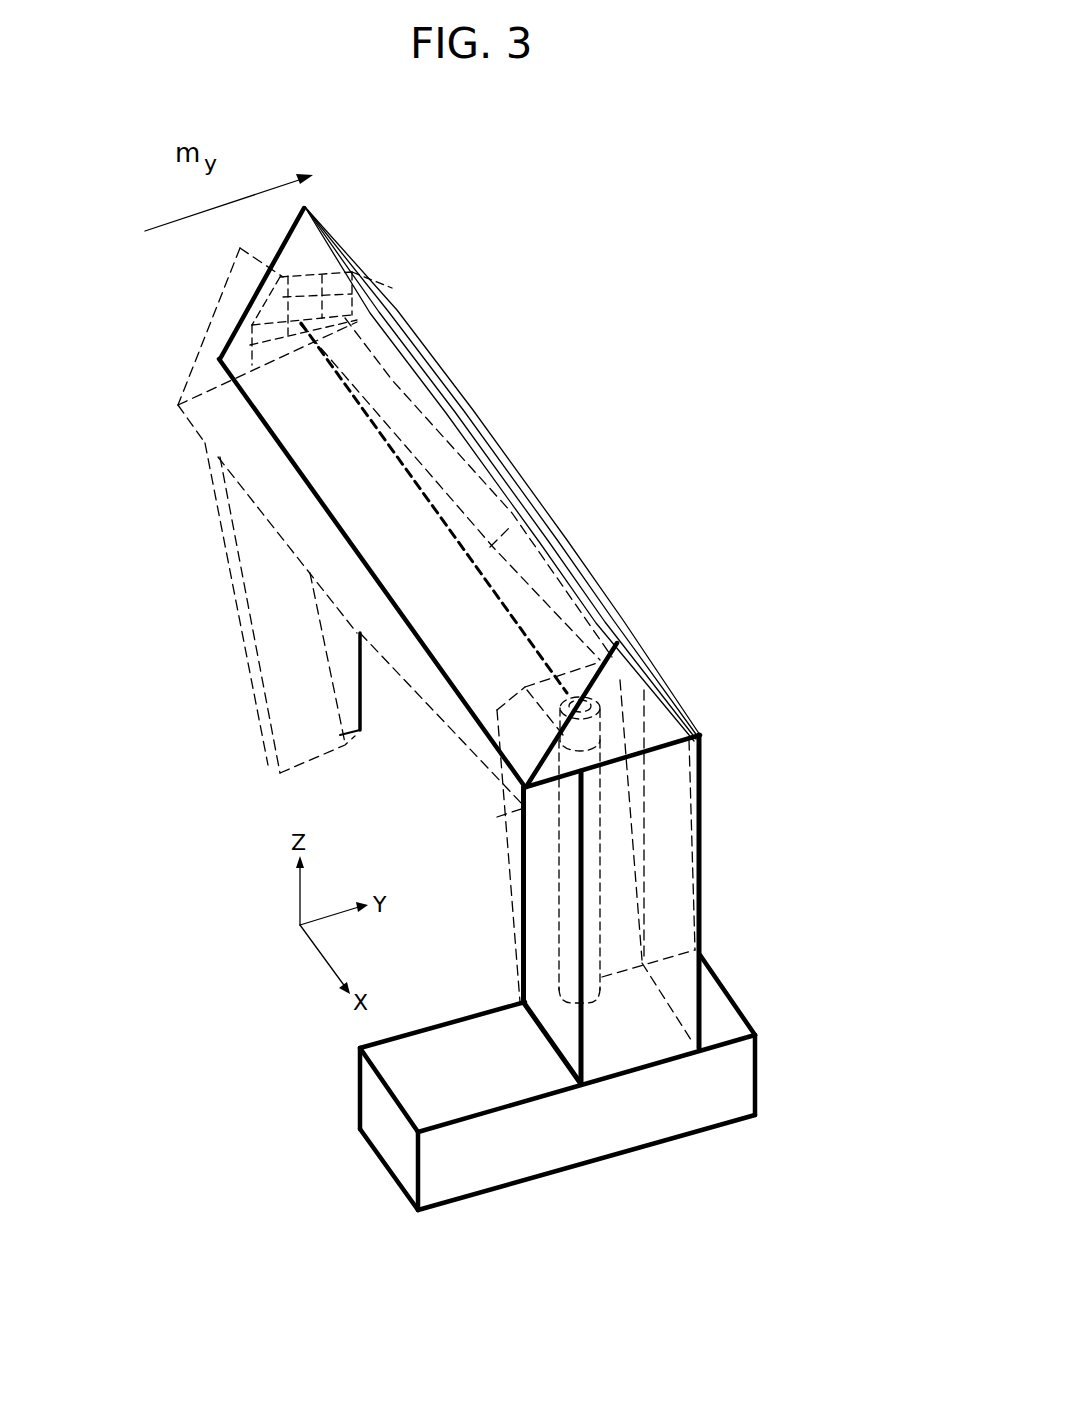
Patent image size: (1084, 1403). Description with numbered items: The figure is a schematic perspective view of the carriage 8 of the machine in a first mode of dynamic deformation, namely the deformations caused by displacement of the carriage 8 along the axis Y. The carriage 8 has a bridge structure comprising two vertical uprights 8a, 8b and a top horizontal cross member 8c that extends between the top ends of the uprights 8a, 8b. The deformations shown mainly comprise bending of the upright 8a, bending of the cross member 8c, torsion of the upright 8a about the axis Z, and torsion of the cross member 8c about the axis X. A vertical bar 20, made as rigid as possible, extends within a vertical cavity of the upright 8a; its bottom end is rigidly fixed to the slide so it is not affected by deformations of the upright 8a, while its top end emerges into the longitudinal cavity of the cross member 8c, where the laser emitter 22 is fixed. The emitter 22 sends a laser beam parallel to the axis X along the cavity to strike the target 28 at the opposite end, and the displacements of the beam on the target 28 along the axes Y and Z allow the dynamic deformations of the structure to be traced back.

The carriage 8 is at (709, 688).
The vertical upright 8a is at (667, 833).
The vertical upright 8b is at (355, 737).
The top horizontal cross member 8c is at (548, 523).
The vertical bar 20 is at (570, 874).
The laser emitter 22 is at (630, 643).
The target 28 is at (352, 272).